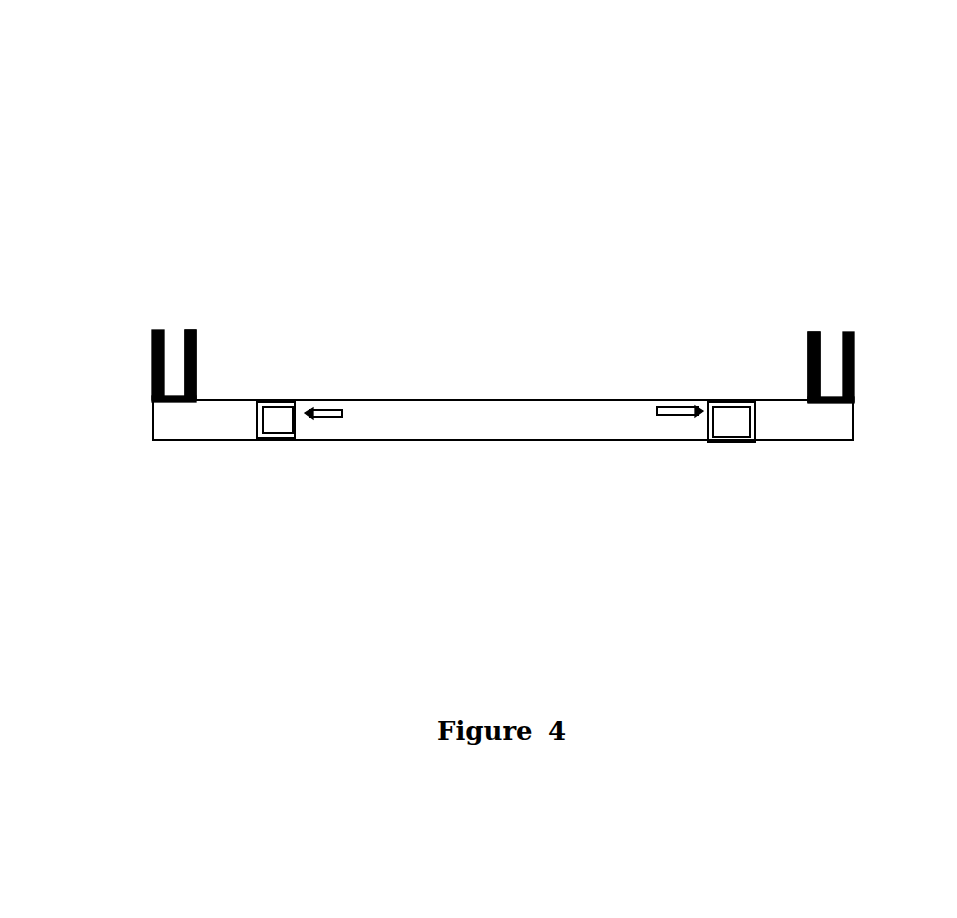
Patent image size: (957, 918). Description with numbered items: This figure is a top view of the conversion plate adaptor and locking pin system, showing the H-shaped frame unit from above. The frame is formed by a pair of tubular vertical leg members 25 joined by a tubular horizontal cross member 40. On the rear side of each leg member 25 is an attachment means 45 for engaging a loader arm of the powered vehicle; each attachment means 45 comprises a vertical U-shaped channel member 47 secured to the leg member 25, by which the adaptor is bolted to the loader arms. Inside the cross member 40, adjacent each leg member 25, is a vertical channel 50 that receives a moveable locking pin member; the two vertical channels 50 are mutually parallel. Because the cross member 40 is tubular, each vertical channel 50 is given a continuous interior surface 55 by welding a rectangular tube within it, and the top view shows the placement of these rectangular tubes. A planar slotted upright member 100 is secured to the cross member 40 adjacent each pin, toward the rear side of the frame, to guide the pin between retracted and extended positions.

The vertical leg member 25 is at (172, 430).
The horizontal cross member 40 is at (519, 413).
The attachment means 45 is at (178, 314).
The U-shaped channel member 47 is at (205, 345).
The vertical channel 50 is at (277, 430).
The continuous interior surface 55 is at (277, 438).
The slotted upright member 100 is at (322, 408).